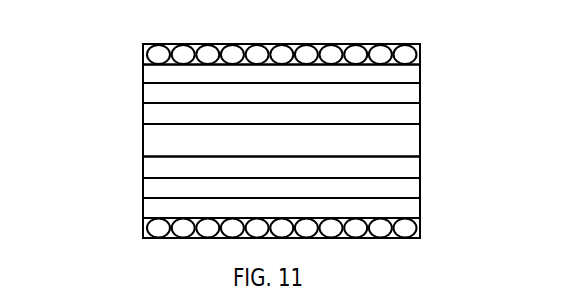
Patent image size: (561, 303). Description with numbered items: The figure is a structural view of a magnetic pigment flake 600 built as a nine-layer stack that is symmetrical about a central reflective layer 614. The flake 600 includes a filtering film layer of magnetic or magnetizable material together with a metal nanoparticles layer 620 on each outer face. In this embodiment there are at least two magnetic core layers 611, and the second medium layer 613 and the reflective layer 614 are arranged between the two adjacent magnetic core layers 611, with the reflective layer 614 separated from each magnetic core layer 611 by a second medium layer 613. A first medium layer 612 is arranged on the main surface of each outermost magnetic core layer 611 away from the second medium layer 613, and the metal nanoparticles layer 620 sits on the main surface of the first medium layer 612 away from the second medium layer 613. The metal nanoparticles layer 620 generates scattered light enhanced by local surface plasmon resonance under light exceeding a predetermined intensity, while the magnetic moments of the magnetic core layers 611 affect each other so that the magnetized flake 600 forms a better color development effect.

The magnetic pigment flake 600 is at (127, 36).
The metal nanoparticles layer 620 is at (420, 48).
The first medium layer 612 is at (420, 74).
The magnetic core layer 611 is at (420, 92).
The second medium layer 613 is at (420, 120).
The reflective layer 614 is at (420, 142).